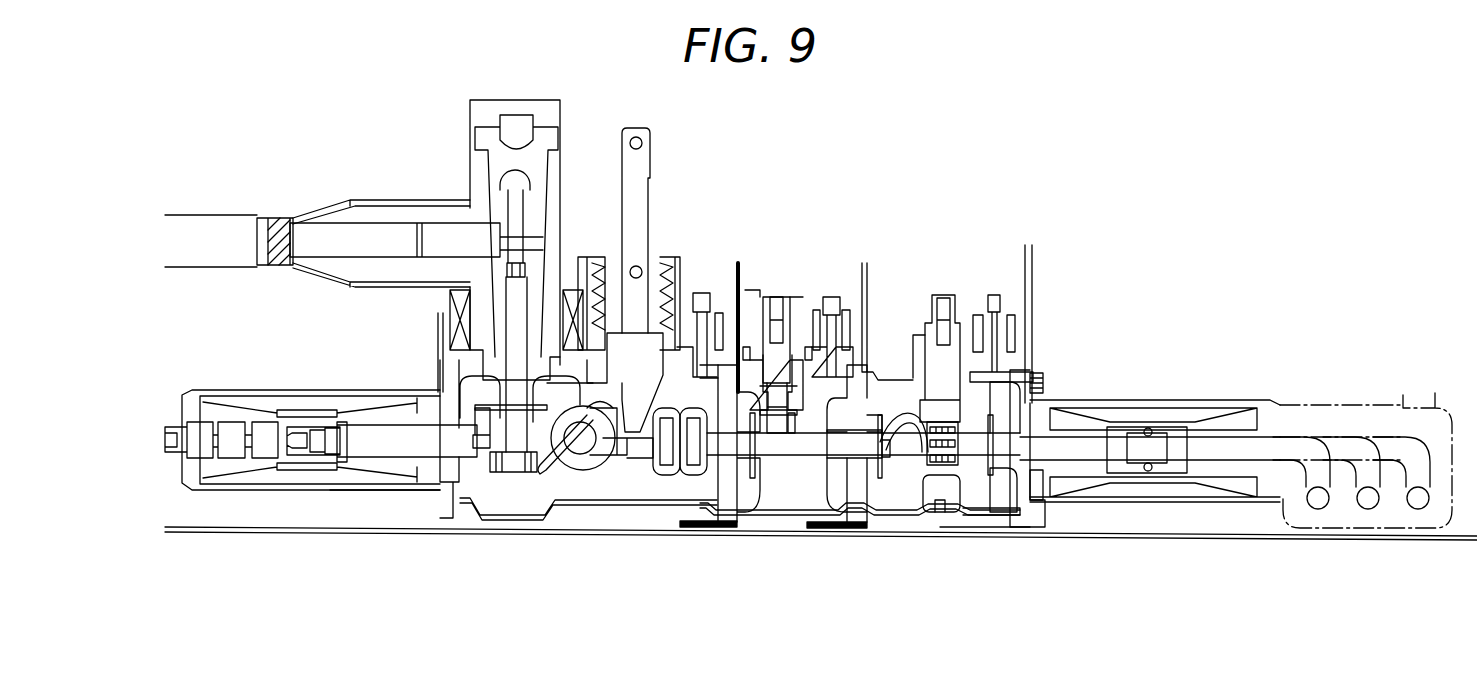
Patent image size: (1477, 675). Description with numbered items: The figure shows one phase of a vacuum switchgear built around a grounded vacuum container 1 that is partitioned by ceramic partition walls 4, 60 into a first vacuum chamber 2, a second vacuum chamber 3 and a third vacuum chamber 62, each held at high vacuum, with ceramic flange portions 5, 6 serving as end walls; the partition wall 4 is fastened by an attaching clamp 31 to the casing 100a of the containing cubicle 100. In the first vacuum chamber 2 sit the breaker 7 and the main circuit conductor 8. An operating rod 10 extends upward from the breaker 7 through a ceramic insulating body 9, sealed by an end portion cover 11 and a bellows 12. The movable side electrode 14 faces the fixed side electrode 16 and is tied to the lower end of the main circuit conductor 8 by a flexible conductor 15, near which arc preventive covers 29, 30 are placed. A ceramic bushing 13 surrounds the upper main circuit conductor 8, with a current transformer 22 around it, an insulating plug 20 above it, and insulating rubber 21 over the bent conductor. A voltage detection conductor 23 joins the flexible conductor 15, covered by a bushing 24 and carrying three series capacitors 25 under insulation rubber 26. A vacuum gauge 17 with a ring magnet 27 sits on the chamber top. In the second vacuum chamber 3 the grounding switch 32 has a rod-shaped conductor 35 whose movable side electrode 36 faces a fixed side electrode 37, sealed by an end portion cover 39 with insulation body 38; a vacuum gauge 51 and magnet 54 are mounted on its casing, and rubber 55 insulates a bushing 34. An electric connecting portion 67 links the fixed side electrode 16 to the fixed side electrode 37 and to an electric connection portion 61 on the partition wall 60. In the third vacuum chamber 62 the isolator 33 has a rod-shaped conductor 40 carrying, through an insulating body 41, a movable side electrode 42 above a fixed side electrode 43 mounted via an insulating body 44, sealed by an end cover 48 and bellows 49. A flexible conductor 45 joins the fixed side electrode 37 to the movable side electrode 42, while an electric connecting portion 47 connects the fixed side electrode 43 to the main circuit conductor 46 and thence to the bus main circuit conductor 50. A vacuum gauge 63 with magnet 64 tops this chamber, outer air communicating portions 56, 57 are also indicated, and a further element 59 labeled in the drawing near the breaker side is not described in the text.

The vacuum container 1 is at (527, 520).
The first vacuum chamber 2 is at (612, 458).
The second vacuum chamber 3 is at (797, 493).
The partition wall 4 is at (738, 500).
The flange portion 5 is at (450, 518).
The flange portion 6 is at (1027, 527).
The breaker 7 is at (623, 432).
The main circuit conductor 8 is at (475, 247).
The insulating body 9 is at (637, 340).
The operating rod 10 is at (628, 205).
The end portion cover 11 is at (593, 258).
The bellows 12 is at (668, 260).
The bushing 13 is at (490, 300).
The movable side electrode 14 is at (673, 475).
The flexible conductor 15 is at (548, 470).
The fixed side electrode 16 is at (686, 475).
The vacuum gauge 17 is at (700, 295).
The insulating plug 20 is at (468, 155).
The rubber 21 is at (345, 283).
The current transformer 22 is at (583, 317).
The voltage detection conductor 23 is at (340, 450).
The bushing 24 is at (385, 457).
The capacitors 25 is at (270, 423).
The insulation rubber 26 is at (345, 410).
The magnet 27 is at (718, 318).
The arc preventive cover 29 is at (585, 472).
The arc preventive cover 30 is at (657, 475).
The attaching clamp 31 is at (737, 527).
The grounding switch 32 is at (779, 335).
The isolator 33 is at (1003, 410).
The bushing 34 is at (1043, 472).
The rod-shaped conductor 35 is at (775, 340).
The movable side electrode 36 is at (857, 450).
The fixed side electrode 37 is at (777, 415).
The insulation body 38 is at (742, 325).
The end portion cover 39 is at (760, 320).
The rod-shaped conductor 40 is at (785, 330).
The insulating body 41 is at (975, 432).
The movable side electrode 42 is at (1040, 383).
The fixed side electrode 43 is at (1097, 450).
The insulating body 44 is at (948, 495).
The flexible conductor 45 is at (898, 392).
The main circuit conductor 46 is at (1120, 410).
The electric connecting portion 47 is at (983, 520).
The end cover 48 is at (923, 335).
The bellows 49 is at (947, 300).
The main circuit conductor 50 is at (1418, 512).
The vacuum gauge 51 is at (832, 300).
The magnet 54 is at (845, 318).
The rubber 55 is at (1210, 485).
The outer air communicating portion 56 is at (1147, 513).
The outer air communicating portion 57 is at (408, 512).
The collar 59 is at (480, 475).
The partition wall 60 is at (862, 512).
The electric connection portion 61 is at (887, 458).
The third vacuum chamber 62 is at (905, 488).
The vacuum gauge 63 is at (996, 297).
The magnet 64 is at (1012, 325).
The electric connecting portion 67 is at (728, 447).
The containing cubicle 100 is at (222, 540).
The casing 100a is at (968, 540).